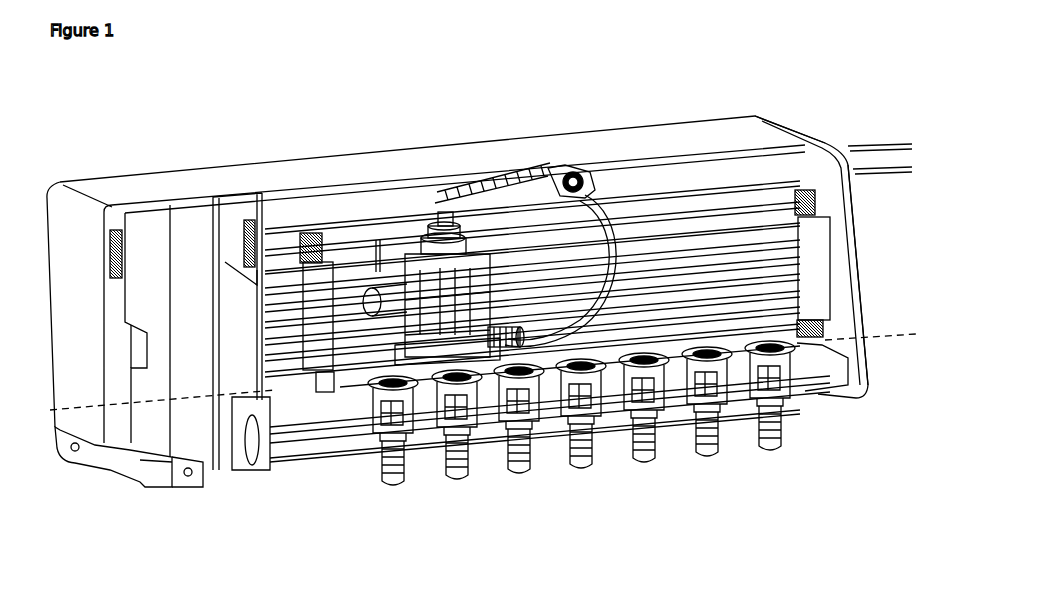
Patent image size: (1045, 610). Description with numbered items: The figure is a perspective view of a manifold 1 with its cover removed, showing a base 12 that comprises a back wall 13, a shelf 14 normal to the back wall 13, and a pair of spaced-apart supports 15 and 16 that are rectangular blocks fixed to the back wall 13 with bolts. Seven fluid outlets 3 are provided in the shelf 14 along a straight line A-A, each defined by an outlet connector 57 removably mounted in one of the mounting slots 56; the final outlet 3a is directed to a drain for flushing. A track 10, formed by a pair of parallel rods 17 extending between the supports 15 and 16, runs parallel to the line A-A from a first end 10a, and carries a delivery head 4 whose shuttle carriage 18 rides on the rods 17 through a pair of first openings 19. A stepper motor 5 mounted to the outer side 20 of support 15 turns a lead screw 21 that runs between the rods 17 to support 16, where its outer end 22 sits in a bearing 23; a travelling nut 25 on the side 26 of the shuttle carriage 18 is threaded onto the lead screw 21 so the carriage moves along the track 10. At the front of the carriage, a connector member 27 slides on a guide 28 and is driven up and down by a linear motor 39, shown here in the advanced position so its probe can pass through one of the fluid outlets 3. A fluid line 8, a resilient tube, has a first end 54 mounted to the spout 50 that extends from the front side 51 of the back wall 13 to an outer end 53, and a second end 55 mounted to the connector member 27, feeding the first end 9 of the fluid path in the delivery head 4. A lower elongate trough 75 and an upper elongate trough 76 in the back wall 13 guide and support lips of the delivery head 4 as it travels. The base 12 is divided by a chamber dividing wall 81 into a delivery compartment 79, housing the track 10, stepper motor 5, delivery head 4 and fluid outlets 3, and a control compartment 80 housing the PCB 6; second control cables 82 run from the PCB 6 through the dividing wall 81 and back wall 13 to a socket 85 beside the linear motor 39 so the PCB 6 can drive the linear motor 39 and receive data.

The manifold 1 is at (127, 126).
The fluid outlets 3 is at (806, 312).
The final fluid outlet 3a is at (811, 332).
The delivery head 4 is at (411, 234).
The stepper motor 5 is at (262, 205).
The PCB 6 is at (222, 198).
The fluid line 8 is at (611, 256).
The first end 9 is at (520, 410).
The track 10 is at (727, 207).
The first end of the track 10a is at (334, 372).
The base 12 is at (187, 165).
The back wall 13 is at (639, 249).
The shelf 14 is at (710, 433).
The support 15 is at (297, 214).
The support 16 is at (828, 242).
The parallel rods 17 is at (699, 217).
The shuttle carriage 18 is at (372, 248).
The first openings 19 is at (395, 246).
The outer side 20 is at (300, 372).
The lead screw 21 is at (677, 212).
The outer end 22 is at (780, 180).
The bearing 23 is at (803, 167).
The travelling nut 25 is at (312, 258).
The side 26 is at (340, 256).
The connector member 27 is at (465, 410).
The guide 28 is at (423, 407).
The linear motor 39 is at (437, 232).
The spout 50 is at (514, 185).
The front side 51 is at (836, 143).
The outer end 53 is at (545, 173).
The first end 54 is at (570, 178).
The second end 55 is at (543, 430).
The mounting slots 56 is at (593, 430).
The outlet connector 57 is at (630, 417).
The lower elongate trough 75 is at (663, 423).
The upper elongate trough 76 is at (760, 175).
The delivery compartment 79 is at (374, 373).
The control compartment 80 is at (150, 400).
The chamber dividing wall 81 is at (253, 407).
The second control cables 82 is at (485, 195).
The socket 85 is at (452, 218).
The line A- A is at (485, 372).